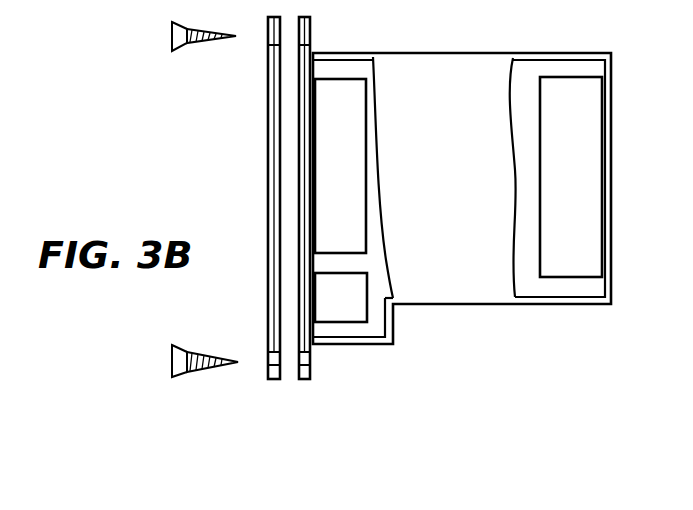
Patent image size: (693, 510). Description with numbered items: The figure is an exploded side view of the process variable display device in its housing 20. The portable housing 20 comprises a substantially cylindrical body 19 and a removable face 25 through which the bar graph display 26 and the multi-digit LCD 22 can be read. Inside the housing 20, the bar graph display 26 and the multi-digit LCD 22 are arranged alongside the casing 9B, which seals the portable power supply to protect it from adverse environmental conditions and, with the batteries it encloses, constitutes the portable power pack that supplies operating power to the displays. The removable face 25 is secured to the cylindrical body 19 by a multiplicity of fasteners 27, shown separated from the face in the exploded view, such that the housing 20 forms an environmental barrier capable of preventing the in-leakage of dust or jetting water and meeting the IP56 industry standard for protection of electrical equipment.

The screws 27 is at (192, 27).
The removable face 25 is at (266, 180).
The housing 20 is at (369, 53).
The cylindrical body 19 is at (495, 305).
The bar graph display 26 is at (349, 186).
The multi-digit LCD 22 is at (352, 312).
The casing 9B is at (588, 206).